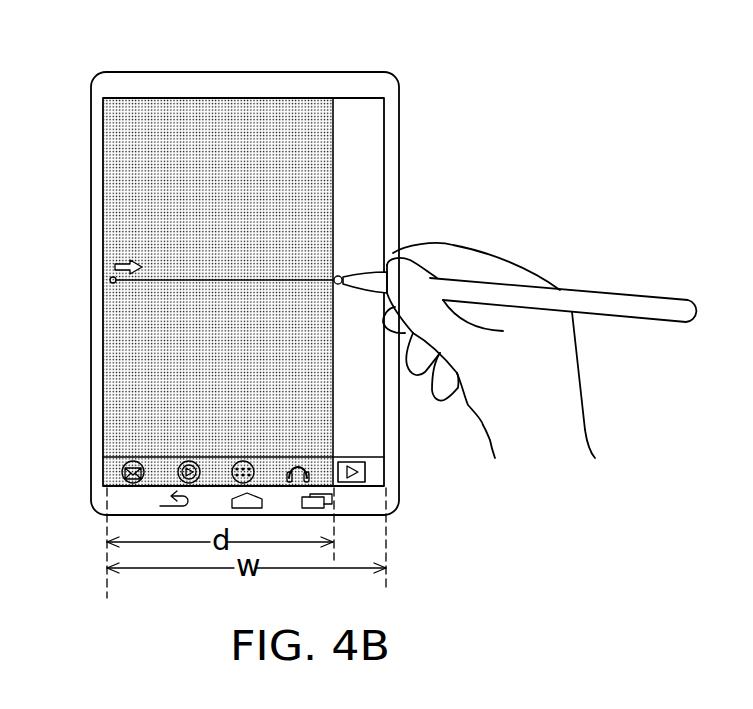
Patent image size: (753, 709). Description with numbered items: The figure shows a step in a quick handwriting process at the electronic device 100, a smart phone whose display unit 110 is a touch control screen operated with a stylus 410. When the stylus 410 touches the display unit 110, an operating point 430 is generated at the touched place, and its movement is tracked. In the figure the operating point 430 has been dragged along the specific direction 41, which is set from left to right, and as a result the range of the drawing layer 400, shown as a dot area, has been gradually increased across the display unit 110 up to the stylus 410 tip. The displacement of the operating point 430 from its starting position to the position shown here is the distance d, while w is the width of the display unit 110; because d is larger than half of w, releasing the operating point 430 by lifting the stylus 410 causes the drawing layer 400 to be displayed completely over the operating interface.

The electronic device 100 is at (400, 175).
The display unit 110 is at (383, 122).
The drawing layer 400 is at (297, 115).
The specific direction 41 is at (120, 260).
The stylus 410 is at (593, 292).
The operating point 430 is at (329, 287).